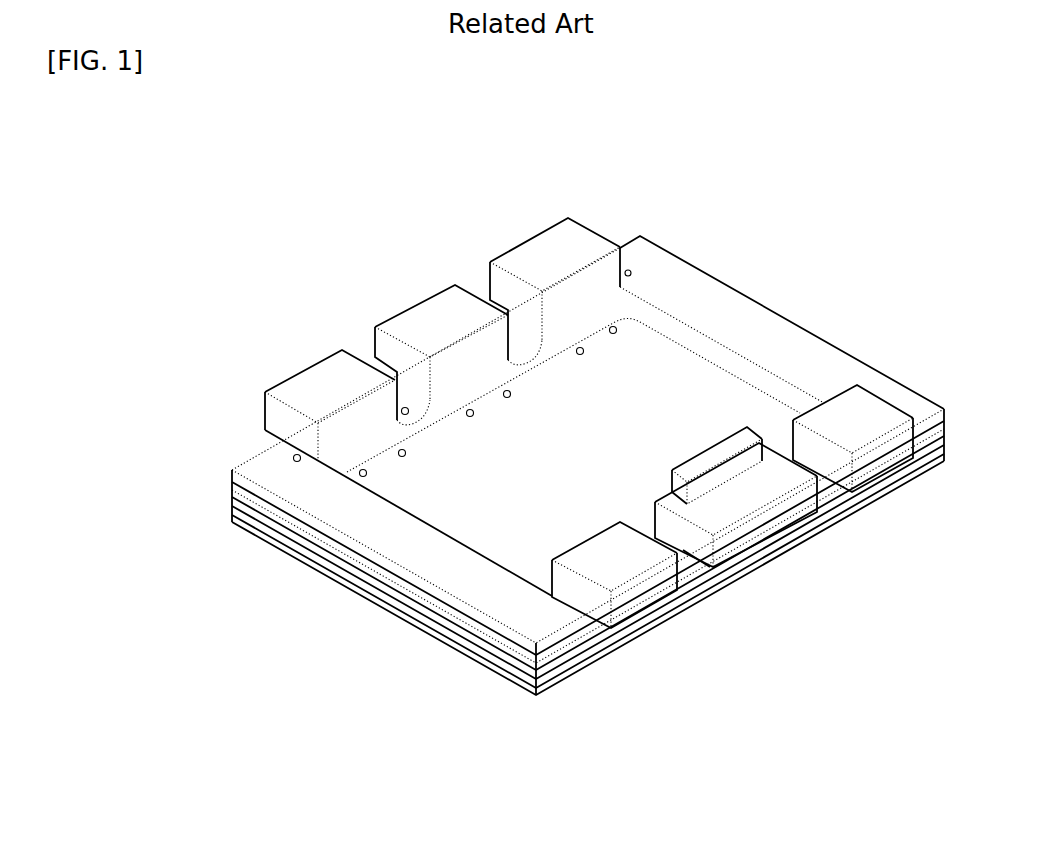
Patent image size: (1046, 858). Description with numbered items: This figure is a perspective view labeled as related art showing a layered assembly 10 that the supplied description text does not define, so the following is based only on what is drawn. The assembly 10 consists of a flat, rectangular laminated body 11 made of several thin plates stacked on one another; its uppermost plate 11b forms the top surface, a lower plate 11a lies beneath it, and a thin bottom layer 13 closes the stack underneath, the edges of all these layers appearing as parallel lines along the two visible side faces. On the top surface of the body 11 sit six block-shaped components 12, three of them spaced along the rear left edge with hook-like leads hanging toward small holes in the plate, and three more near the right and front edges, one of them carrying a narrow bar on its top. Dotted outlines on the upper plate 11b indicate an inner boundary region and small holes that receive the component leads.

The semiconductor package / module 10 is at (303, 176).
The substrate 11 is at (400, 554).
The lower substrate layer 11a is at (613, 641).
The upper substrate layer 11b is at (278, 444).
The electronic component 12 is at (318, 378).
The bottom layer 13 is at (463, 651).